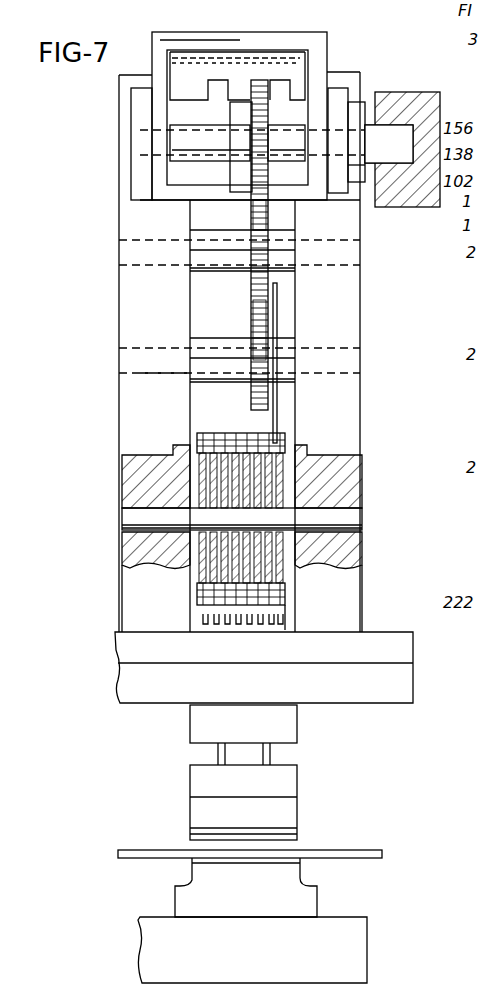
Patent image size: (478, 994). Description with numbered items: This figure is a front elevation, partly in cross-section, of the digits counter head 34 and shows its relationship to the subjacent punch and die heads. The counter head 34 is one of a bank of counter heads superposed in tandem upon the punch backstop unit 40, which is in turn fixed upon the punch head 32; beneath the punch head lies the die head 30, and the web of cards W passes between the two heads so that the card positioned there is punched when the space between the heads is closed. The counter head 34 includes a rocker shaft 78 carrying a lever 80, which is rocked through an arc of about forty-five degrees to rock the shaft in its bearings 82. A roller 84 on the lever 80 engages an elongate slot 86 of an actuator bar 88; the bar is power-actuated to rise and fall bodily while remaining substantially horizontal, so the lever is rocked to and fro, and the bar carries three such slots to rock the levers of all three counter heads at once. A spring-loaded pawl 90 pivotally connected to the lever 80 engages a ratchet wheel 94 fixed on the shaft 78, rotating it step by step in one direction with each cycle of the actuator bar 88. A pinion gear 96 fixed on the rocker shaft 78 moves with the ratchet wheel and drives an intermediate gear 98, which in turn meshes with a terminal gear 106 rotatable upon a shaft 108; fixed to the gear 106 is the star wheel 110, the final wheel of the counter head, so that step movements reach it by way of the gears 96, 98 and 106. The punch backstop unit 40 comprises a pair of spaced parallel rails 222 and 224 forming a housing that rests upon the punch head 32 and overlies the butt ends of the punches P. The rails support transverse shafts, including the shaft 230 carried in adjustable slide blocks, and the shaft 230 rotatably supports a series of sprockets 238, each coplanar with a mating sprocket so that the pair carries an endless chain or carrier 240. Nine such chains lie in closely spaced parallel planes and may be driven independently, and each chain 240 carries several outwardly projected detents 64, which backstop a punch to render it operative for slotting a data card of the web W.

The die head 30 is at (298, 869).
The punch head 32 is at (296, 834).
The counter head 34 is at (119, 90).
The punch backstop unit 40 is at (122, 482).
The detents 64 is at (286, 614).
The rocker shaft 78 is at (134, 166).
The lever 80 is at (365, 166).
The bearings 82 is at (138, 122).
The roller 84 is at (392, 124).
The elongate slot 86 is at (402, 132).
The actuator bar 88 is at (455, 72).
The spring-loaded pawl 90 is at (240, 80).
The ratchet wheel 94 is at (230, 111).
The pinion gear 96 is at (261, 82).
The intermediate gear 98 is at (252, 220).
The terminal gear 106 is at (253, 336).
The shaft 108 is at (142, 378).
The star wheel 110 is at (278, 321).
The rail 222 is at (121, 590).
The rail 224 is at (363, 606).
The shaft 230 is at (360, 515).
The sprockets 238 is at (283, 576).
The endless chain 240 is at (285, 596).
The punches P is at (274, 628).
The web of cards W is at (374, 856).